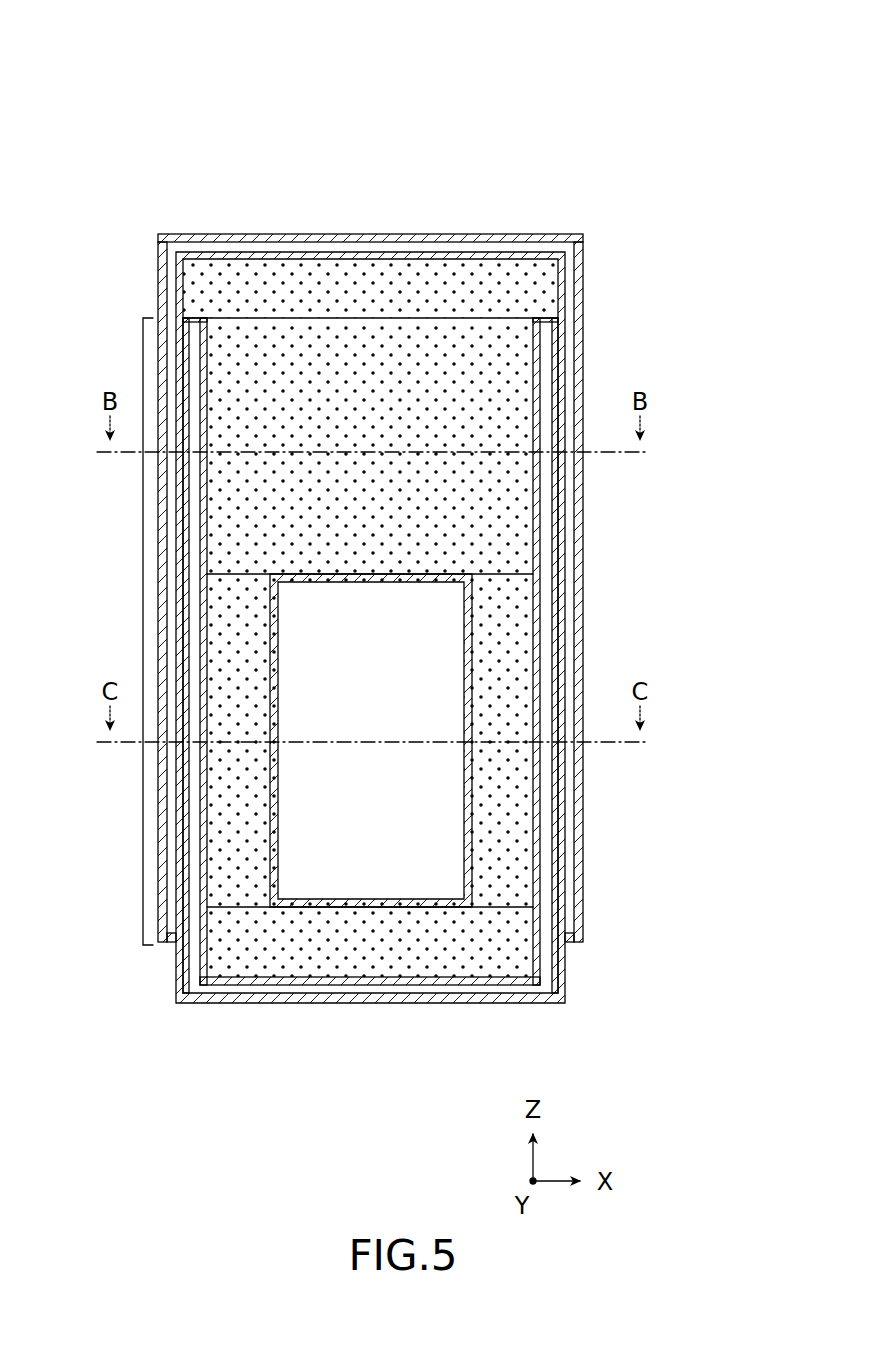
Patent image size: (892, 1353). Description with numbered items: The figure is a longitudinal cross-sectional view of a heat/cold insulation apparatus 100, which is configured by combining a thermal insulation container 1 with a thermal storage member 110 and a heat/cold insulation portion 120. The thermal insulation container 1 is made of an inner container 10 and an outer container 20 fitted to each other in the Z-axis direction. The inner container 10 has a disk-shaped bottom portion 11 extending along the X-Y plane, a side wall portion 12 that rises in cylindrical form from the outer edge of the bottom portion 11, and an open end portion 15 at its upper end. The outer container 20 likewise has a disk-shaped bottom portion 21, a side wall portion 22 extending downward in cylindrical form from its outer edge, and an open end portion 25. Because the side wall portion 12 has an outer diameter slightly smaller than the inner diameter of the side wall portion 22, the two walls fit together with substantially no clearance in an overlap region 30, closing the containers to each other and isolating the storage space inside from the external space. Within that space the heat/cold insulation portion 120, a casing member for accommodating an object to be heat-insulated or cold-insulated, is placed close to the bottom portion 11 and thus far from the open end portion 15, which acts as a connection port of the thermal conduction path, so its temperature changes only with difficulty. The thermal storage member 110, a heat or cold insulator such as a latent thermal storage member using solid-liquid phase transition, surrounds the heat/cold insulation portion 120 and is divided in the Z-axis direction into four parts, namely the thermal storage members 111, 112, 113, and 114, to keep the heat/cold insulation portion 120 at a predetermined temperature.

The heat/cold insulation apparatus 100 is at (204, 84).
The thermal insulation container 1 is at (620, 126).
The inner container 10 is at (578, 1016).
The bottom portion 11 is at (375, 992).
The side wall portion 12 is at (540, 622).
The open end portion 15 is at (562, 320).
The outer container 20 is at (146, 222).
The bottom portion 21 is at (370, 244).
The side wall portion 22 is at (567, 566).
The open end portion 25 is at (586, 942).
The overlap region 30 is at (143, 636).
The thermal storage member 110 is at (489, 282).
The thermal storage member 111 is at (370, 288).
The thermal storage member 112 is at (370, 448).
The thermal storage member 113 is at (370, 740).
The thermal storage member 114 is at (370, 942).
The heat/cold insulation portion 120 is at (371, 740).